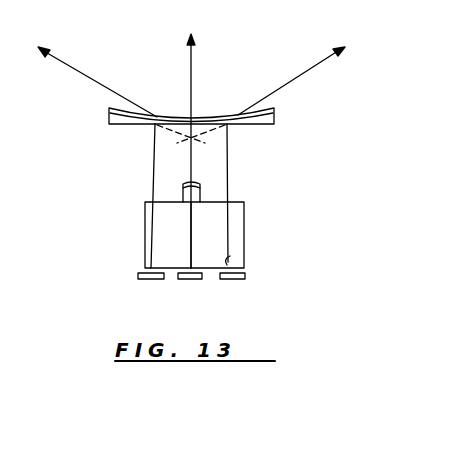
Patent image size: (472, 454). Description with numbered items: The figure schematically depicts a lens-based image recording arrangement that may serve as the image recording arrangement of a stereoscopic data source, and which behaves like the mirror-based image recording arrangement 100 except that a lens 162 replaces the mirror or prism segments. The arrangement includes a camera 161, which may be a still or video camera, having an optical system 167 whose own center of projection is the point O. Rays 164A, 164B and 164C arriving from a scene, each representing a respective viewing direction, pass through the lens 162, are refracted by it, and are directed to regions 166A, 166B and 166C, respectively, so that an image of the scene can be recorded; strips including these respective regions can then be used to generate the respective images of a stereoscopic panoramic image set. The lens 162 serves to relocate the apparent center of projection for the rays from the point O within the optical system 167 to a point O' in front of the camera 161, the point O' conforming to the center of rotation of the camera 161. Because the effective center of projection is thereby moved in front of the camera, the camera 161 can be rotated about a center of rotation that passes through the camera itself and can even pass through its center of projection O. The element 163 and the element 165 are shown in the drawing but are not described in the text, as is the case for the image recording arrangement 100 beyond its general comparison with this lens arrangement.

The image recording arrangement 100 is at (89, 323).
The camera 161 is at (152, 228).
The lens 162 is at (110, 122).
The optical axis beam 163 is at (195, 244).
The ray 164A is at (315, 68).
The ray 164B is at (192, 75).
The ray 164C is at (82, 72).
The light source 165 is at (231, 258).
The region 166A is at (140, 273).
The region 166B is at (193, 280).
The region 166C is at (246, 273).
The optical system 167 is at (183, 192).
The center of projection O is at (189, 196).
The relocated apparent center of projection O' is at (215, 146).